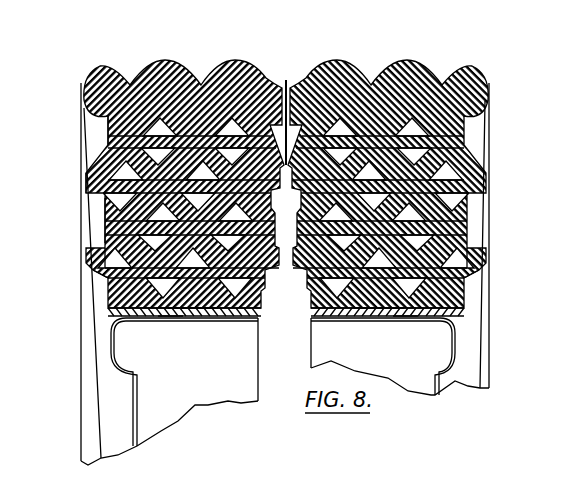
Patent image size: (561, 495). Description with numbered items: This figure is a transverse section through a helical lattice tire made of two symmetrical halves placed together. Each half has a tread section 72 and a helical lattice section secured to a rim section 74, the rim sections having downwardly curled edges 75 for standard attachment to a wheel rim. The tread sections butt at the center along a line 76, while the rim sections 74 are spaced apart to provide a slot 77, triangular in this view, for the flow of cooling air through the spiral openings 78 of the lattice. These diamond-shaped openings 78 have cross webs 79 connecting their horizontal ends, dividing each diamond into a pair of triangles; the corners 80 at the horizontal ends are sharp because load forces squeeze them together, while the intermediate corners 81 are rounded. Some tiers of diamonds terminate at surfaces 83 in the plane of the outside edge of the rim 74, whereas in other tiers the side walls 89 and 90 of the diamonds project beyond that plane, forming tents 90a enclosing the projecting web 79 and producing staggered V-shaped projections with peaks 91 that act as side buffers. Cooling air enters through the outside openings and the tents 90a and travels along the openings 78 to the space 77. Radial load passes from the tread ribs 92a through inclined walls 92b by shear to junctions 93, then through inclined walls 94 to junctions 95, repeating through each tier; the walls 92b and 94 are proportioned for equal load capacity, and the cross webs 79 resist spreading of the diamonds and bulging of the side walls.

The tread section 72 is at (76, 80).
The rim section 74 is at (210, 305).
The downwardly curled edge 75 is at (112, 357).
The line 76 is at (285, 75).
The slot 77 is at (252, 332).
The spiral opening 78 is at (97, 245).
The cross web 79 is at (95, 275).
The corner 80 is at (289, 297).
The intermediate corner 81 is at (163, 302).
The surface 83 is at (100, 120).
The side wall 89 is at (97, 205).
The side wall 90 is at (100, 150).
The tent 90a is at (78, 184).
The peak 91 is at (552, 398).
The rib 92a is at (158, 53).
The inclined wall 92b is at (138, 76).
The junction 93 is at (193, 127).
The inclined wall 94 is at (178, 166).
The junction 95 is at (177, 179).